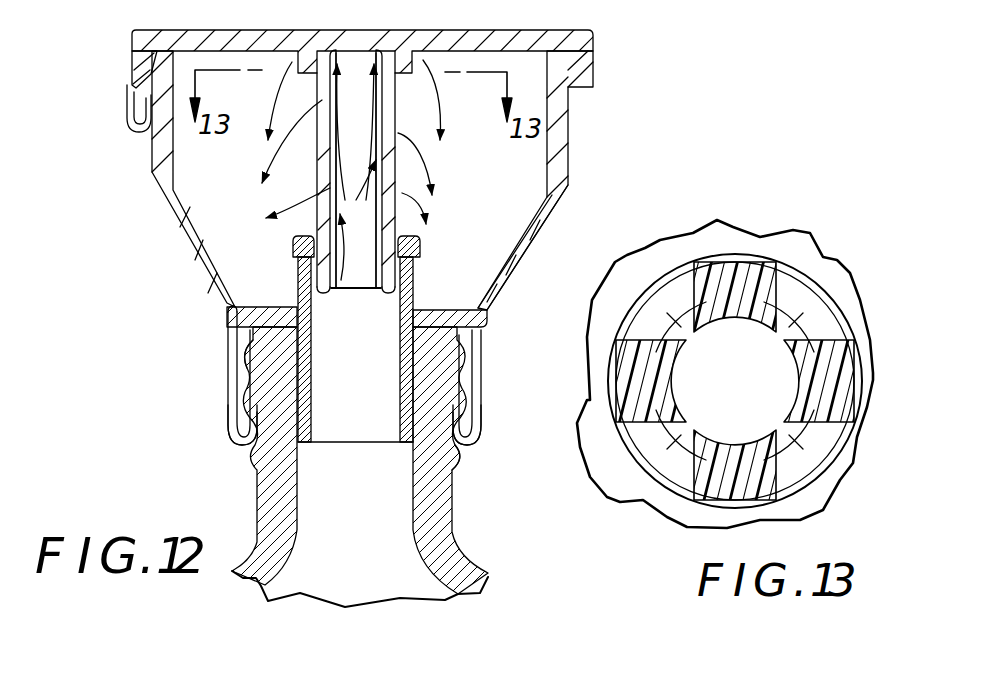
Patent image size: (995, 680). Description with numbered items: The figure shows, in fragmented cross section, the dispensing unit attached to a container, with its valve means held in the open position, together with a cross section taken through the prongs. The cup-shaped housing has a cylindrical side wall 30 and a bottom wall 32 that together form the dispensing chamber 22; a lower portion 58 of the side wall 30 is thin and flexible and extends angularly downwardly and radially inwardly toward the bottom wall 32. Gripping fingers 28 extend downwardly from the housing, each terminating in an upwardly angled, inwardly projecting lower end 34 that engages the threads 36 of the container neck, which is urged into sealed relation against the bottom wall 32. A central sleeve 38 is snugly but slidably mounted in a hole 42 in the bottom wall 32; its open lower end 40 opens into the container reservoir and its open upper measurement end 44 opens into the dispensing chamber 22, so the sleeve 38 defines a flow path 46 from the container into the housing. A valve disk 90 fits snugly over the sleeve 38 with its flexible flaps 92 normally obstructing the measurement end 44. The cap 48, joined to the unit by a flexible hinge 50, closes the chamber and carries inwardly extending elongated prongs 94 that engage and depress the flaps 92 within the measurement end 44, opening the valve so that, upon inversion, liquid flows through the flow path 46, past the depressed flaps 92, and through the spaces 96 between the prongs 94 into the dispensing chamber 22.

In FIG. 12, the dispensing chamber 22 is at (193, 190).
In FIG. 12, the gripping fingers 28 is at (227, 378).
In FIG. 12, the cylindrical side wall 30 is at (563, 122).
In FIG. 12, the bottom wall 32 is at (245, 300).
In FIG. 13, the bottom wall 32 is at (607, 457).
In FIG. 12, the lower end 34 is at (228, 413).
In FIG. 12, the threads 36 is at (457, 462).
In FIG. 12, the central sleeve 38 is at (300, 350).
In FIG. 12, the open lower end 40 is at (388, 445).
In FIG. 12, the hole 42 is at (337, 292).
In FIG. 12, the measurement end 44 is at (297, 255).
In FIG. 12, the flow path 46 is at (355, 412).
In FIG. 12, the cap 48 is at (533, 31).
In FIG. 12, the flexible hinge 50 is at (127, 130).
In FIG. 12, the lower portion of the side wall 58 is at (522, 262).
In FIG. 12, the valve disk 90 is at (440, 248).
In FIG. 13, the valve disk 90 is at (802, 440).
In FIG. 12, the flexible flaps 92 is at (382, 292).
In FIG. 12, the prongs 94 is at (312, 222).
In FIG. 13, the prongs 94 is at (765, 272).
In FIG. 12, the spaces 96 is at (330, 97).